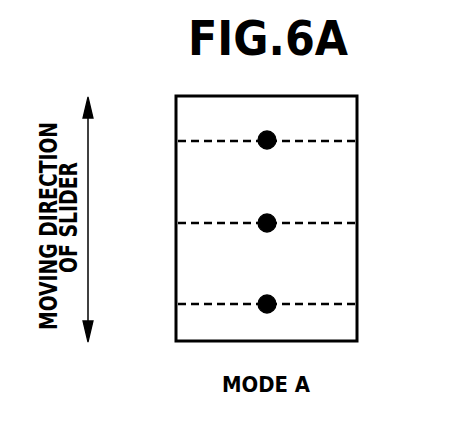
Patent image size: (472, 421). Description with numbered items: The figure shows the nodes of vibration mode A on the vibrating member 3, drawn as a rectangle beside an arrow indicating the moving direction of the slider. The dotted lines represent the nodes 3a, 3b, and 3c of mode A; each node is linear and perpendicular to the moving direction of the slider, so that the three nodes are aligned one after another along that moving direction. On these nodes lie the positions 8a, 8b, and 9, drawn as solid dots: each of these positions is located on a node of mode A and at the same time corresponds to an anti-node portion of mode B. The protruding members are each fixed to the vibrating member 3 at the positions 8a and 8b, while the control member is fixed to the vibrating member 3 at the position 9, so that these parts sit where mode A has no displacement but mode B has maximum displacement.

The vibrating member 3 is at (357, 110).
The node 3a is at (203, 303).
The node 3b is at (203, 222).
The node 3c is at (203, 140).
The position 8a is at (273, 311).
The position 8b is at (273, 147).
The position 9 is at (273, 230).